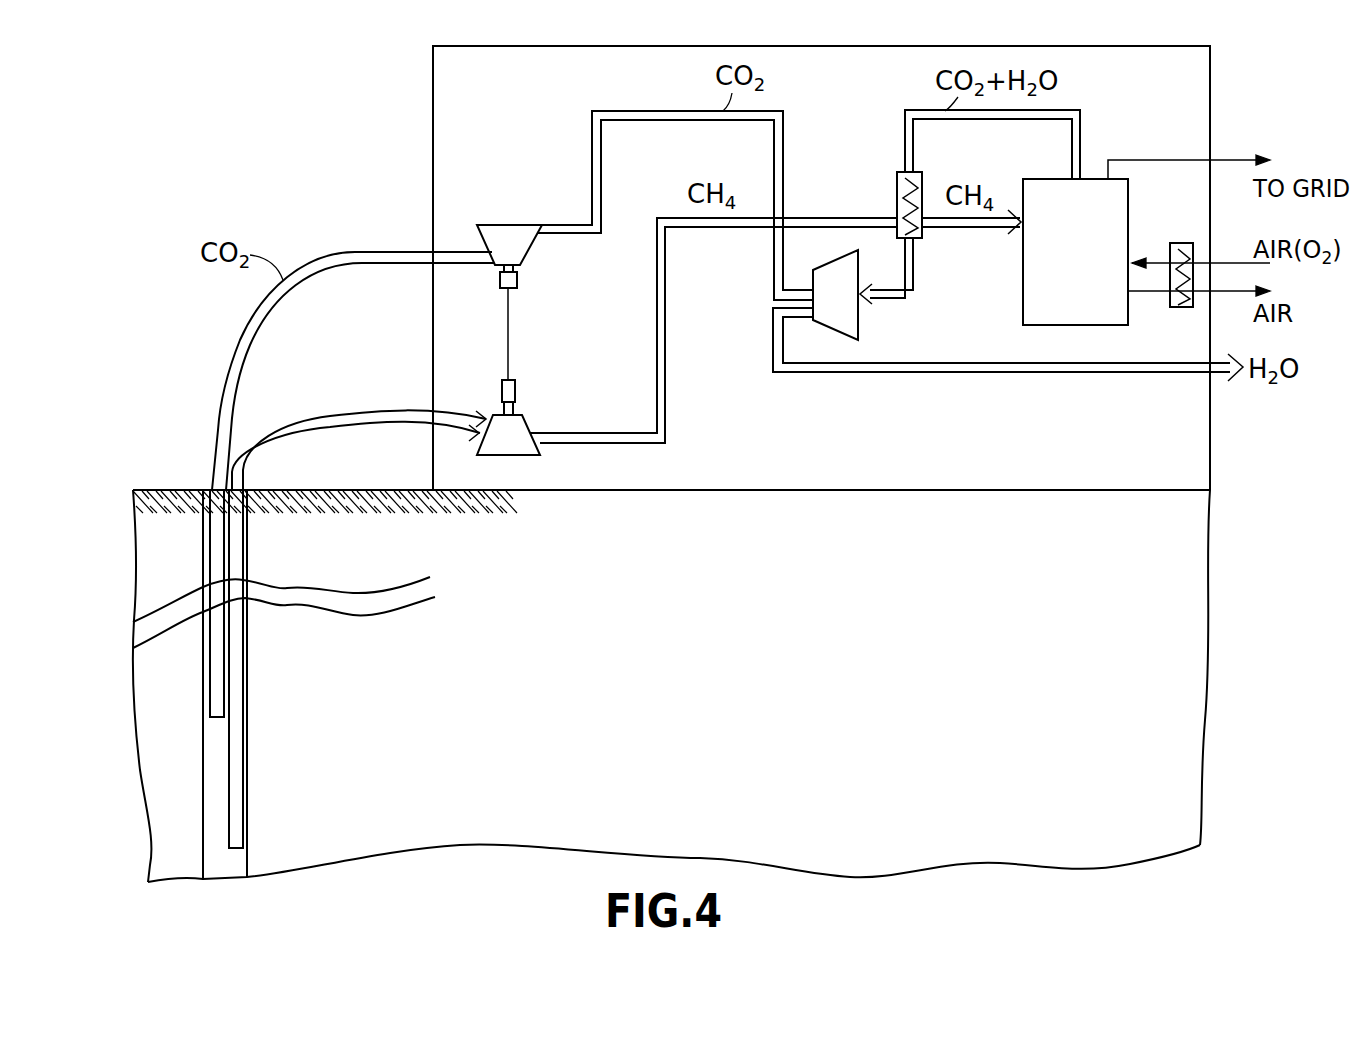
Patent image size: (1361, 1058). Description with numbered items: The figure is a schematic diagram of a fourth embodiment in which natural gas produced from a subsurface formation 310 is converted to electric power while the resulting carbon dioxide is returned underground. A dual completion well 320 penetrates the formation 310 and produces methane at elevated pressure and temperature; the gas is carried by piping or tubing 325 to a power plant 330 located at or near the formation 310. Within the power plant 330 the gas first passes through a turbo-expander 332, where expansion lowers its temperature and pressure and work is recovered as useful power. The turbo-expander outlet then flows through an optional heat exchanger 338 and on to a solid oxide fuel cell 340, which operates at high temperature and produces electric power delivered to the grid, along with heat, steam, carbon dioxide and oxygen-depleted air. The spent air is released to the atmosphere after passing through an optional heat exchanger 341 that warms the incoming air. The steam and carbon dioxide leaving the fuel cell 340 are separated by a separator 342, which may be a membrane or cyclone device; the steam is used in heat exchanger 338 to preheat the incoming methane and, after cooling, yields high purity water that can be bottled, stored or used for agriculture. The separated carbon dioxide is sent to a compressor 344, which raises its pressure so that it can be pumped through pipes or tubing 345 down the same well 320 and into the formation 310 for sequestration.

The formation 310 is at (437, 684).
The well 320 is at (200, 565).
The piping or tubing 325 is at (343, 420).
The power plant 330 is at (433, 148).
The turbo-expander 332 is at (528, 422).
The heat exchanger 338 is at (895, 187).
The solid oxide fuel cell 340 is at (1130, 192).
The heat exchanger 341 is at (1183, 243).
The separator 342 is at (862, 318).
The compressor 344 is at (530, 252).
The pipes or tubing 345 is at (258, 330).